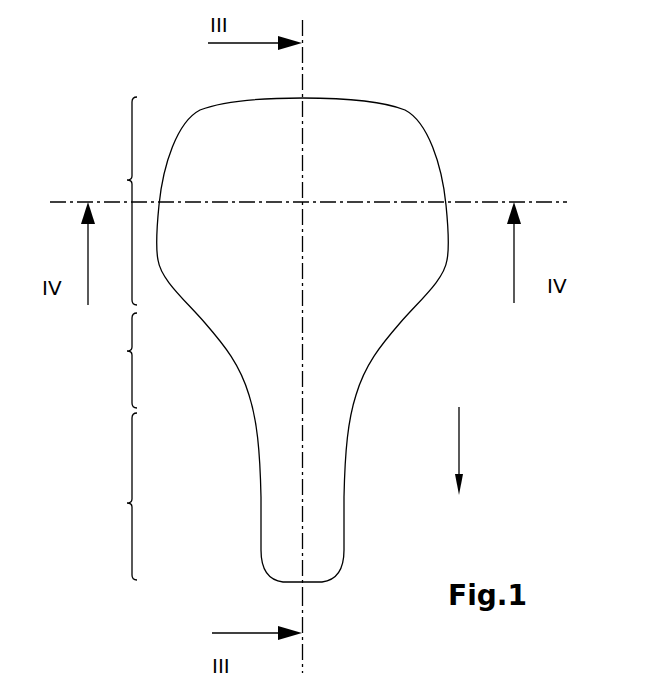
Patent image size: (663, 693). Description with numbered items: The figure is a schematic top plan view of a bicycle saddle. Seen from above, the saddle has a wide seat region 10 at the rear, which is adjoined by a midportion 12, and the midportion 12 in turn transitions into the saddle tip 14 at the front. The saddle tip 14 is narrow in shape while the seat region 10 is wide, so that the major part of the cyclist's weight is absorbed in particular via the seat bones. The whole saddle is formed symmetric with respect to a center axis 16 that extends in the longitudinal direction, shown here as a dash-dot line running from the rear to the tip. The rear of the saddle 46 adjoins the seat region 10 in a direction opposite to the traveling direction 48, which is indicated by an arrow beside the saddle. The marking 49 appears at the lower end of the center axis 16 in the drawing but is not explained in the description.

The seat region 10 is at (114, 201).
The midportion 12 is at (114, 360).
The saddle tip 14 is at (114, 496).
The center axis 16 is at (302, 67).
The rear of the saddle 46 is at (458, 116).
The traveling direction 48 is at (460, 442).
The center line end at nose 49 is at (305, 657).